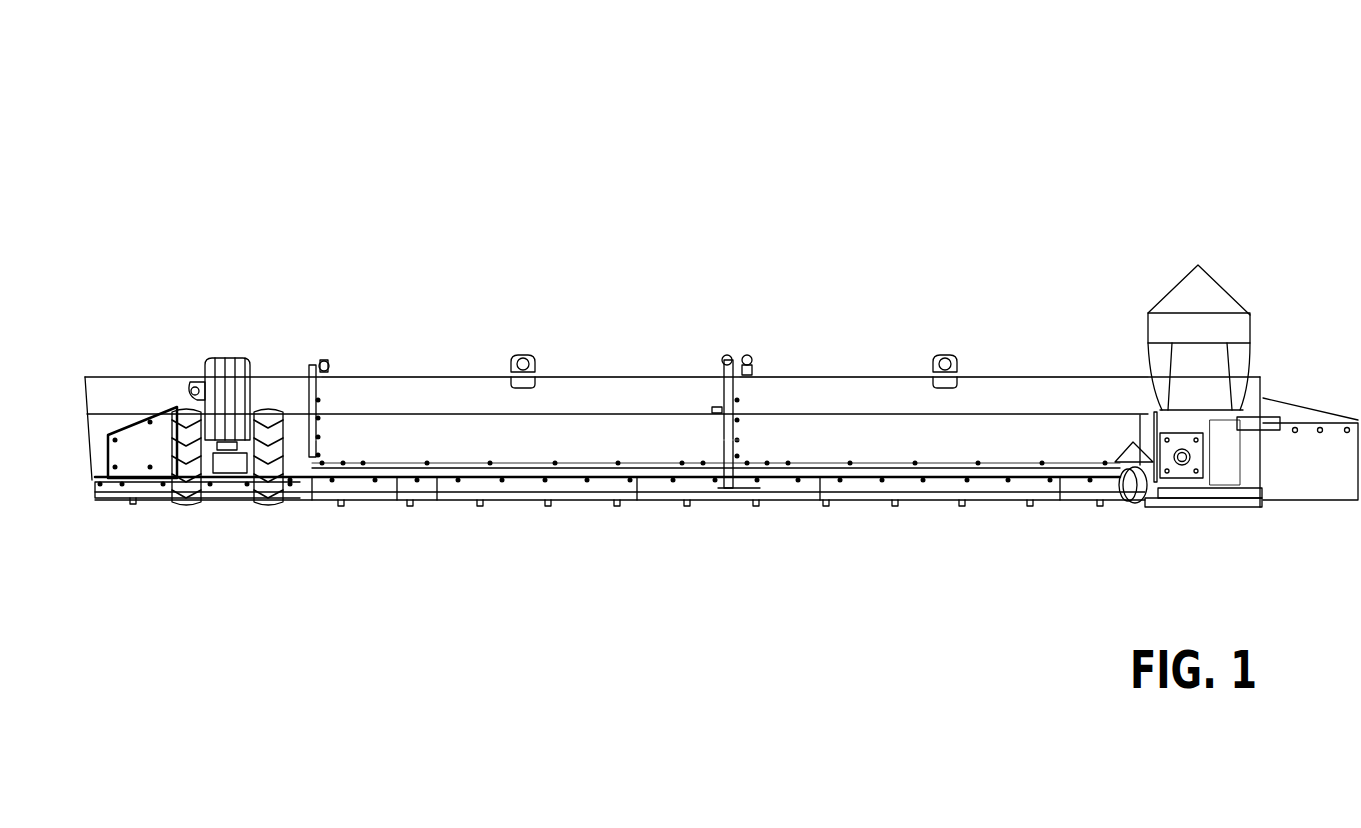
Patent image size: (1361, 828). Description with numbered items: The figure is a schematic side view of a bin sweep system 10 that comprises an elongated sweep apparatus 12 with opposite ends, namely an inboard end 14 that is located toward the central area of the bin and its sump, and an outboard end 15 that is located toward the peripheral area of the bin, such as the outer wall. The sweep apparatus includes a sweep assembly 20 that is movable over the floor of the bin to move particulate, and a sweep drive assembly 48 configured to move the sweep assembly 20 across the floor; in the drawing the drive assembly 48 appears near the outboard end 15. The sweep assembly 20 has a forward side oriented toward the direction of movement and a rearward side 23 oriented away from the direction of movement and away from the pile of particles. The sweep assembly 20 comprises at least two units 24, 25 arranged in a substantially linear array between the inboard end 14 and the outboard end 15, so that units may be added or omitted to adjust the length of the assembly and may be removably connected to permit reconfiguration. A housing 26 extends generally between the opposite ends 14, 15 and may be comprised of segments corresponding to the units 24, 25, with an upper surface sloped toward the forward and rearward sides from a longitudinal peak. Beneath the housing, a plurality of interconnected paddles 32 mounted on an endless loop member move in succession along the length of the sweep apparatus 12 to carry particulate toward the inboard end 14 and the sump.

The bin sweep system 10 is at (1055, 152).
The elongated sweep apparatus 12 is at (893, 263).
The inboard end 14 is at (1340, 525).
The outboard end 15 is at (120, 530).
The sweep assembly 20 is at (655, 380).
The rearward side 23 is at (598, 443).
The unit 24 is at (1052, 398).
The unit 25 is at (283, 392).
The housing 26 is at (800, 395).
The paddles 32 is at (825, 504).
The sweep drive assembly 48 is at (232, 522).